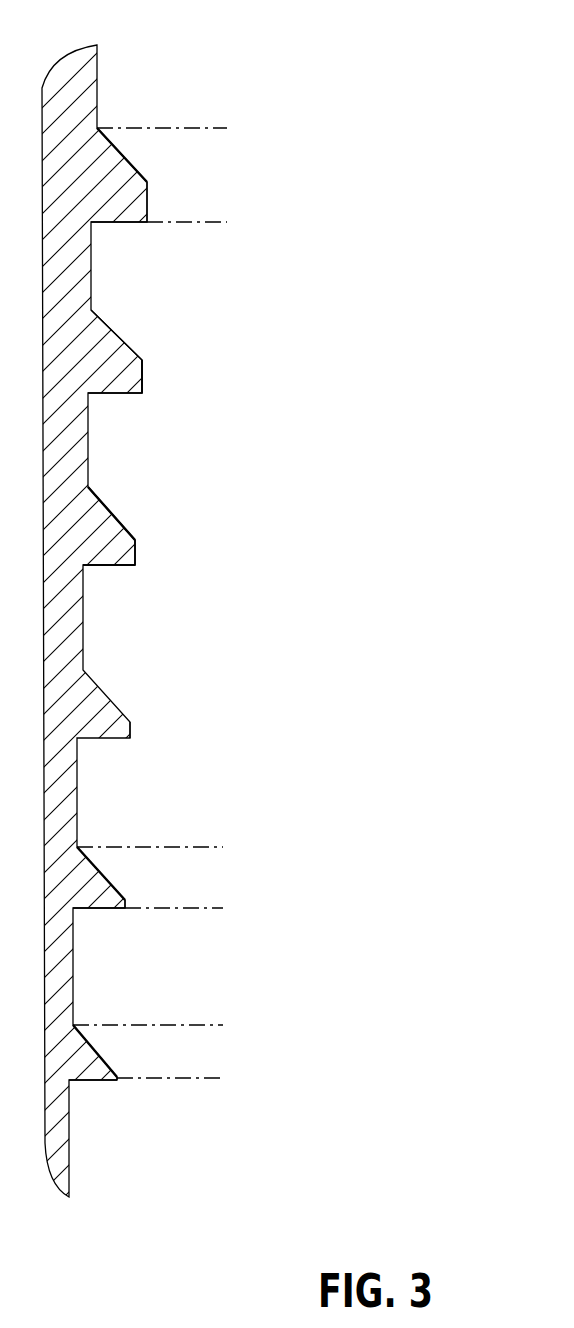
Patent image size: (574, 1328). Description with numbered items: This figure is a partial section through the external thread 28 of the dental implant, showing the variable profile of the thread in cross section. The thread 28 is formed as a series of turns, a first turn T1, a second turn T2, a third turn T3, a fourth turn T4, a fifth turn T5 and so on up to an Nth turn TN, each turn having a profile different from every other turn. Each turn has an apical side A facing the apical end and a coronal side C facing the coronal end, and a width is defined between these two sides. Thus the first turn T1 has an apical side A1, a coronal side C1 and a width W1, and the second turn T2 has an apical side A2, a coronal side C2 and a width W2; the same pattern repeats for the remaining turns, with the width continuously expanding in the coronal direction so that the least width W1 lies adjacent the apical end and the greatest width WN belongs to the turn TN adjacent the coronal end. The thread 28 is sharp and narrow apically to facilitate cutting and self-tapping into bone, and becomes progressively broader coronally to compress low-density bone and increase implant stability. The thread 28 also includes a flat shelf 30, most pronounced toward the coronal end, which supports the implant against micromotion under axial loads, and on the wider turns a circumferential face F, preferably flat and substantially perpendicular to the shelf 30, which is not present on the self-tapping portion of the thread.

The coronal side C is at (108, 512).
The Nth turn TN is at (148, 183).
The width of Nth turn WN is at (229, 128).
The apical side A is at (103, 567).
The circumferential face F is at (142, 373).
The fifth turn T5 is at (143, 394).
The flat shelf 30 is at (112, 394).
The thread 28 is at (137, 540).
The fourth turn T4 is at (136, 566).
The third turn T3 is at (131, 739).
The coronal side of second turn C2 is at (103, 877).
The width of second turn W2 is at (228, 847).
The second turn T2 is at (126, 909).
The apical side of second turn A2 is at (97, 910).
The coronal side of first turn C1 is at (103, 1061).
The width of first turn W1 is at (228, 1025).
The first turn T1 is at (118, 1079).
The apical side of first turn A1 is at (95, 1082).